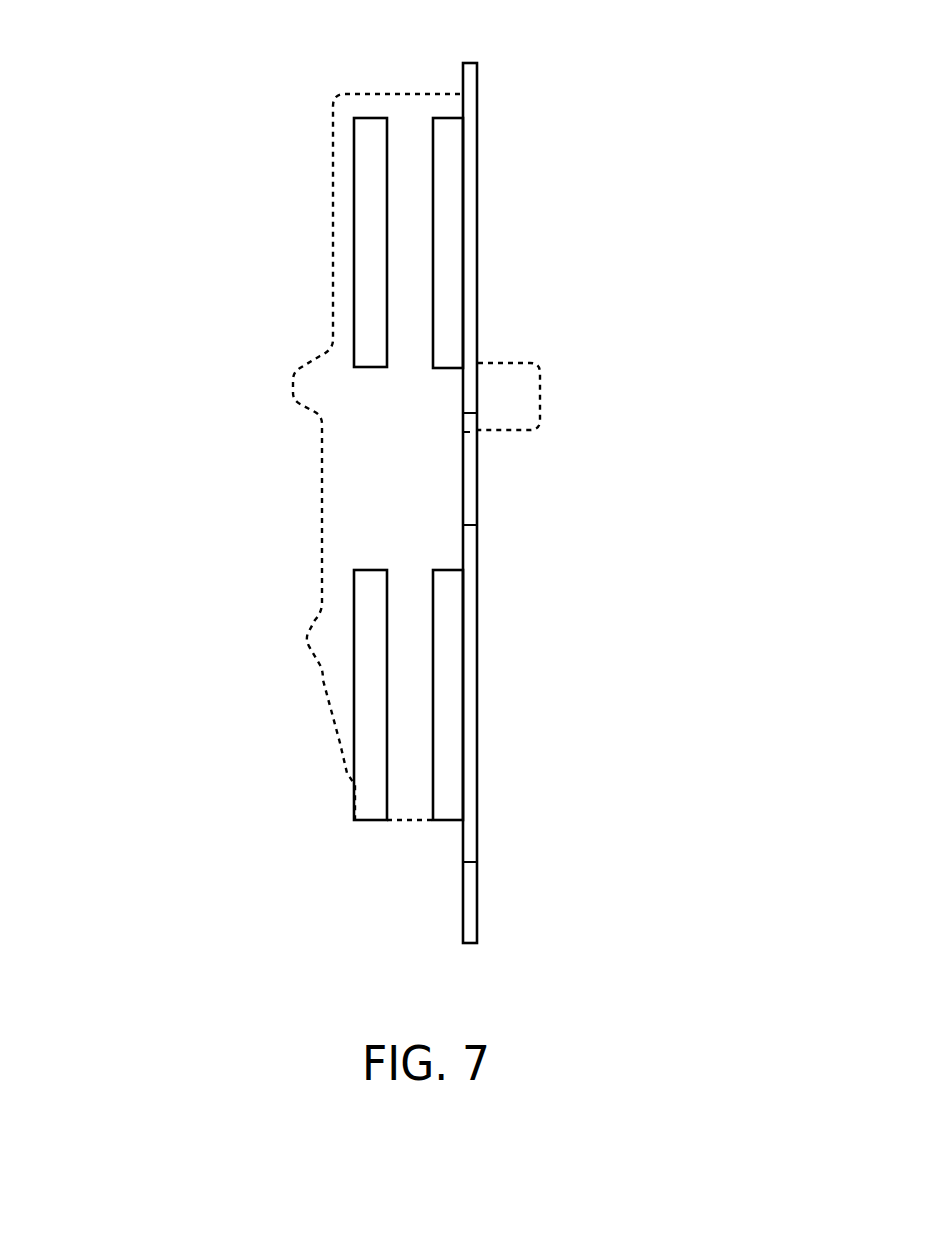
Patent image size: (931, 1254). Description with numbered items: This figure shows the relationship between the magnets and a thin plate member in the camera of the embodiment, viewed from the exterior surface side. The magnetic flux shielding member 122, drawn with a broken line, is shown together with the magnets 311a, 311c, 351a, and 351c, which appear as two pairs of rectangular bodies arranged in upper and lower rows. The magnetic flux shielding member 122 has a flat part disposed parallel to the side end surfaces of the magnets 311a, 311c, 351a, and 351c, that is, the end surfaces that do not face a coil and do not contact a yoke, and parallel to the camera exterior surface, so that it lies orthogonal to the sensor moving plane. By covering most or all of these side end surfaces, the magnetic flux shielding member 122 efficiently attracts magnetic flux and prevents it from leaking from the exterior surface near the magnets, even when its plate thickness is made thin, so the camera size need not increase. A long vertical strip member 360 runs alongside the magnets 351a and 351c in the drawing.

The magnetic flux shielding member 122 is at (323, 515).
The circuit board 360 is at (476, 64).
The magnet 311a is at (370, 195).
The magnet 351a is at (448, 157).
The magnet 311c is at (370, 647).
The magnet 351c is at (448, 677).